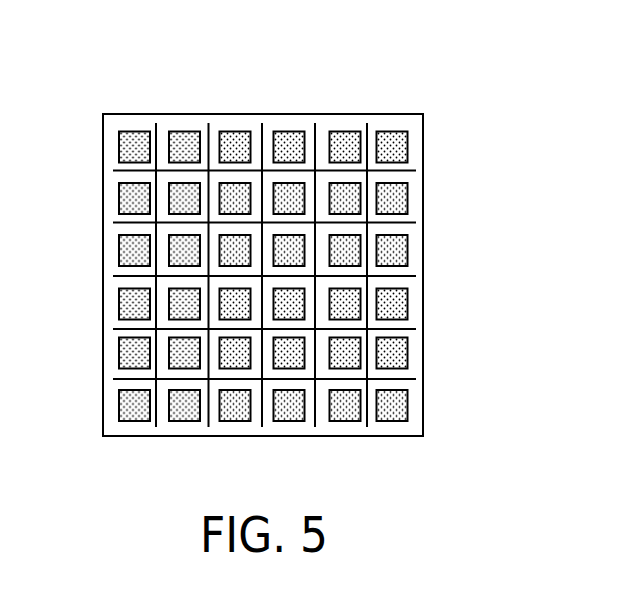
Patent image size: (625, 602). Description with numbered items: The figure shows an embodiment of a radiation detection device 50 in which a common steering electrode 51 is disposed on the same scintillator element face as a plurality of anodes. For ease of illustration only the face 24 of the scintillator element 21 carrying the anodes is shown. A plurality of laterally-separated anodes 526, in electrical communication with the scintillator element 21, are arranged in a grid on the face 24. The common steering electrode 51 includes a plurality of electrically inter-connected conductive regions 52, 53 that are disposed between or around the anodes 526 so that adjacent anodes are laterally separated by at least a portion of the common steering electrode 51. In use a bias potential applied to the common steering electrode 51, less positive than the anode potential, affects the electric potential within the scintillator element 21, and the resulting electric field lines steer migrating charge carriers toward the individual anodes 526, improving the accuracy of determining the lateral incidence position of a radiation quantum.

The radiation detection device 50 is at (462, 61).
The face of the scintillator element 24 is at (110, 125).
The scintillator element 21 is at (105, 390).
The conductive region 53 is at (115, 171).
The conductive region 52 is at (261, 125).
The common steering electrode 51 is at (315, 125).
The anodes 526 is at (407, 147).